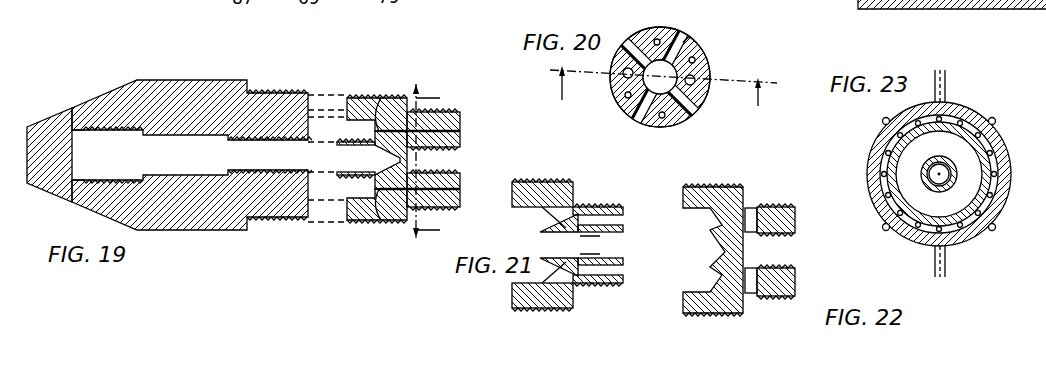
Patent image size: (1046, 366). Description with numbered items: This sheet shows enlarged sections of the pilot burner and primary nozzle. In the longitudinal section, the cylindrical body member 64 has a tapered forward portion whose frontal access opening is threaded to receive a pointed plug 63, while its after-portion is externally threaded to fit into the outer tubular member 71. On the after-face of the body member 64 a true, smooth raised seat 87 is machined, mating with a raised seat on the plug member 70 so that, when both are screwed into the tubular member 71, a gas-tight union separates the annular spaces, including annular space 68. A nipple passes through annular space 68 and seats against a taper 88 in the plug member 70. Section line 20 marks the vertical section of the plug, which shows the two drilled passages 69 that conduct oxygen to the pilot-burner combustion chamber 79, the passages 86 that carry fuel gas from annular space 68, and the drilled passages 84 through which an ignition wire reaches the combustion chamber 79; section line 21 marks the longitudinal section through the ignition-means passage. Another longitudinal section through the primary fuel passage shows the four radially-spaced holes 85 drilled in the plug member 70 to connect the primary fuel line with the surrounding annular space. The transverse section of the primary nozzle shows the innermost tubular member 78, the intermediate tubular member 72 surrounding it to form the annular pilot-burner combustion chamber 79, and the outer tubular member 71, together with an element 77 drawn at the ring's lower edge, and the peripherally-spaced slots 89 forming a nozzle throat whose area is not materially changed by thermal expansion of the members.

In FIG. 19, the pointed plug 63 is at (70, 116).
In FIG. 19, the body member 64 is at (133, 82).
In FIG. 19, the annular space 68 is at (360, 128).
In FIG. 20, the drilled passages 69 is at (625, 101).
In FIG. 19, the plug member 70 is at (458, 142).
In FIG. 21, the plug member 70 is at (620, 235).
In FIG. 22, the plug member 70 is at (713, 212).
In FIG. 23, the outer tubular member 71 is at (882, 125).
In FIG. 23, the intermediate tubular member 72 is at (888, 161).
In FIG. 23, the lower lug 77 is at (882, 228).
In FIG. 23, the innermost tubular member 78 is at (947, 192).
In FIG. 23, the pilot-burner combustion chamber 79 is at (960, 140).
In FIG. 20, the drilled passages 84 is at (618, 75).
In FIG. 21, the drilled passages 84 is at (578, 214).
In FIG. 20, the radially-spaced holes 85 is at (690, 40).
In FIG. 22, the radially-spaced holes 85 is at (751, 212).
In FIG. 19, the passages 86 is at (458, 132).
In FIG. 20, the passages 86 is at (676, 119).
In FIG. 19, the raised seat 87 is at (311, 112).
In FIG. 19, the taper 88 is at (381, 100).
In FIG. 23, the peripherally-spaced slots 89 is at (874, 205).
In FIG. 19, the section line 20- 20 is at (439, 165).
In FIG. 20, the section line 21- 21 is at (657, 98).